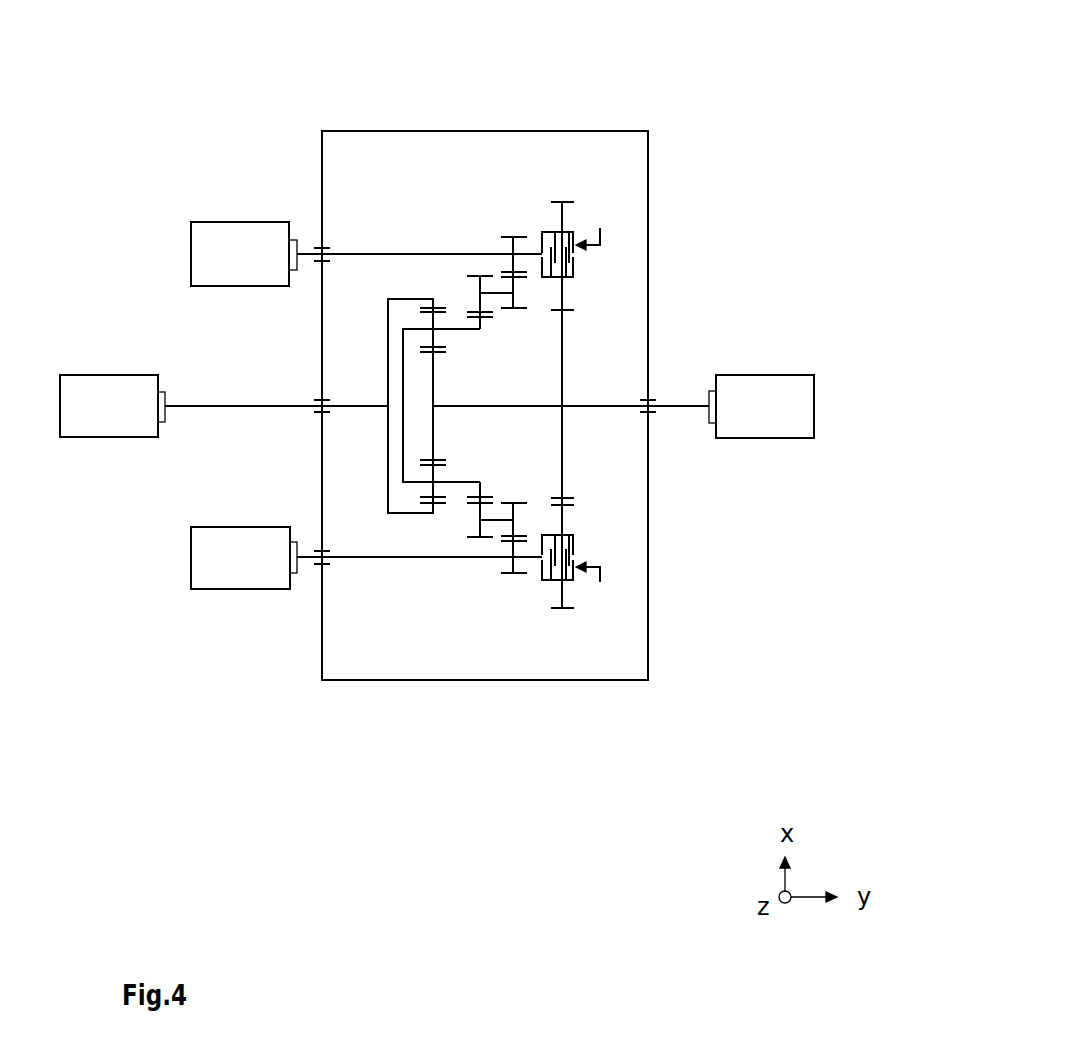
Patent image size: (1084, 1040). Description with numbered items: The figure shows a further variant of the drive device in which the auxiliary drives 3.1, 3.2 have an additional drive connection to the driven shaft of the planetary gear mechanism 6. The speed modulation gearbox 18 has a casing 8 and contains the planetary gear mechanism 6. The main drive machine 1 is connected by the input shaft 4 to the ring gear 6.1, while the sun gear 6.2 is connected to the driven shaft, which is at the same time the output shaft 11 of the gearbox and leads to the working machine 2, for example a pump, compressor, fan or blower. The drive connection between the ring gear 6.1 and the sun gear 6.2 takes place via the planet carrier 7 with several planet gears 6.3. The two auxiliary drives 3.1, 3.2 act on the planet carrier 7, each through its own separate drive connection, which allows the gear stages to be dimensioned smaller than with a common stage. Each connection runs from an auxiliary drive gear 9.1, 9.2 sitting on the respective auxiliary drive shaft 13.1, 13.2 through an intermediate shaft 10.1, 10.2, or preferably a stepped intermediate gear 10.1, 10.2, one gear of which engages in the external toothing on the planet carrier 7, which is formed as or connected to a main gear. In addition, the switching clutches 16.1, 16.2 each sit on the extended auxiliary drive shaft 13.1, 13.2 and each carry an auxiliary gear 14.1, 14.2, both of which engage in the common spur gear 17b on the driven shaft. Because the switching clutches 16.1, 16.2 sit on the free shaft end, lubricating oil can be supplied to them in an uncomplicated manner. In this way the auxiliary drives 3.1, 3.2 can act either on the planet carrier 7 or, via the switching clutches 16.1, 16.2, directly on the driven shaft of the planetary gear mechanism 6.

The main drive machine 1 is at (117, 375).
The working machine 2 is at (785, 373).
The auxiliary drive 3.1 is at (235, 222).
The auxiliary drive 3.2 is at (218, 585).
The input shaft 4 is at (191, 405).
The planetary gear mechanism 6 is at (355, 448).
The ring gear 6.1 is at (388, 394).
The sun gear 6.2 is at (432, 428).
The planet gears 6.3 is at (432, 340).
The planet carrier 7 is at (462, 483).
The casing 8 is at (479, 131).
The auxiliary drive gear 9.1 is at (520, 232).
The auxiliary drive gear 9.2 is at (512, 578).
The intermediate shaft 10.1 is at (502, 290).
The intermediate shaft 10.2 is at (495, 522).
The output shaft 11 is at (690, 402).
The auxiliary drive shaft 13.1 is at (378, 252).
The auxiliary drive shaft 13.2 is at (368, 558).
The auxiliary gear 14.1 is at (563, 292).
The auxiliary gear 14.2 is at (563, 518).
The switching clutch 16.1 is at (573, 255).
The switching clutch 16.2 is at (582, 572).
The common spur gear 17b is at (563, 477).
The speed modulation gearbox 18 is at (668, 572).